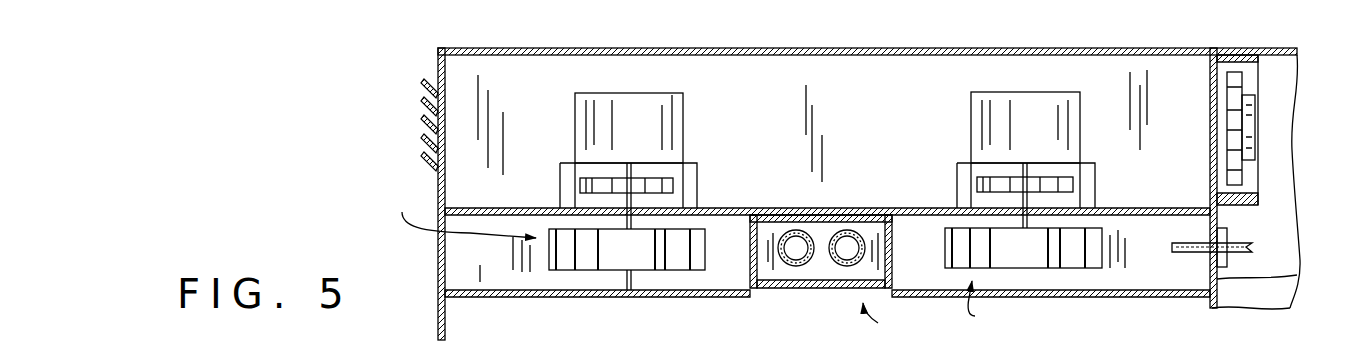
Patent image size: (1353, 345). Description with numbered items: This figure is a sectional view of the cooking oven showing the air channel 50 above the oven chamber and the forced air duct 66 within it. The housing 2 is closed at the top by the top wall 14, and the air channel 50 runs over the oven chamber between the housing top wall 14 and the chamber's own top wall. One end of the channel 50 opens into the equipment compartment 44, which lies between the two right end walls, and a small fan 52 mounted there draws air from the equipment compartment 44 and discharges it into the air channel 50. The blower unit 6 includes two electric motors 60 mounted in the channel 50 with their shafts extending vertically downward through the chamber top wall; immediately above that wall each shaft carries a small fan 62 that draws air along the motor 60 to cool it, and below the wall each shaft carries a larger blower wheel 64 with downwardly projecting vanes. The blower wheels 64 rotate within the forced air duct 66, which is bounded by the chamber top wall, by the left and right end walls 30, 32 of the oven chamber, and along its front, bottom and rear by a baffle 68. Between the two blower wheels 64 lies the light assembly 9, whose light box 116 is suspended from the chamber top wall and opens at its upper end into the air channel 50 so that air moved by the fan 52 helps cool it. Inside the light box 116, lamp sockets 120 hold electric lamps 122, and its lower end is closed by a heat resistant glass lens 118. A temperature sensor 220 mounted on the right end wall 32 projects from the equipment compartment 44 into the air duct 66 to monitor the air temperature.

The housing 2 is at (438, 249).
The blower unit 6 is at (694, 260).
The light assembly 9 is at (878, 320).
The top wall 14 is at (437, 69).
The left end wall 30 is at (437, 293).
The right end wall 32 is at (1290, 276).
The equipment compartment 44 is at (1268, 222).
The air channel 50 is at (889, 82).
The fan 52 is at (1258, 165).
The electric motor 60 is at (655, 146).
The fan 62 is at (592, 184).
The blower wheel 64 is at (575, 255).
The forced air duct 66 is at (480, 265).
The baffle 68 is at (630, 297).
The light box 116 is at (750, 268).
The lens 118 is at (818, 288).
The lamp socket 120 is at (848, 268).
The electric lamp 122 is at (795, 250).
The temperature sensor 220 is at (1180, 253).